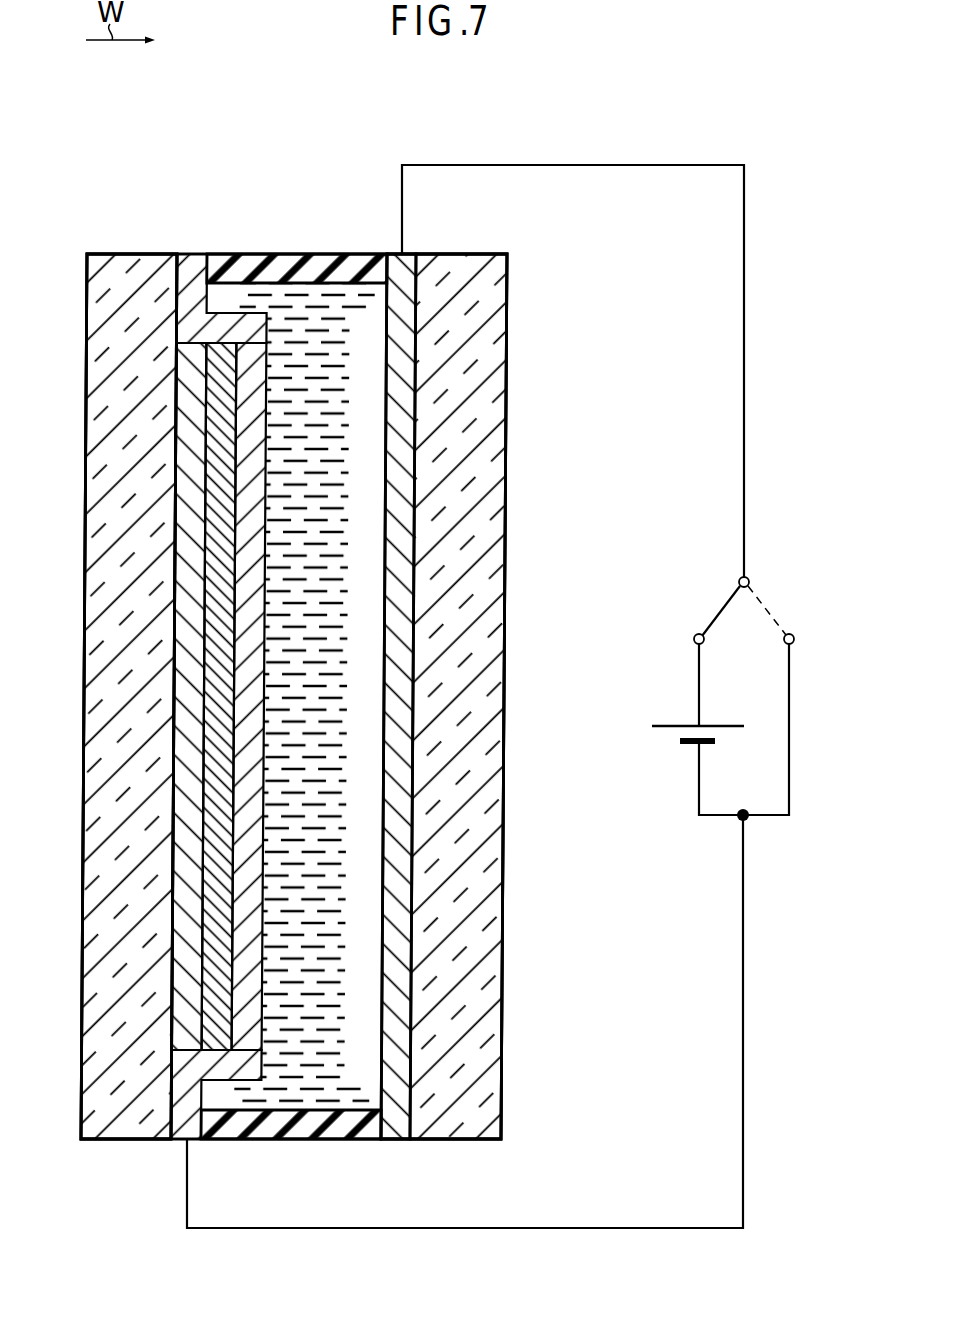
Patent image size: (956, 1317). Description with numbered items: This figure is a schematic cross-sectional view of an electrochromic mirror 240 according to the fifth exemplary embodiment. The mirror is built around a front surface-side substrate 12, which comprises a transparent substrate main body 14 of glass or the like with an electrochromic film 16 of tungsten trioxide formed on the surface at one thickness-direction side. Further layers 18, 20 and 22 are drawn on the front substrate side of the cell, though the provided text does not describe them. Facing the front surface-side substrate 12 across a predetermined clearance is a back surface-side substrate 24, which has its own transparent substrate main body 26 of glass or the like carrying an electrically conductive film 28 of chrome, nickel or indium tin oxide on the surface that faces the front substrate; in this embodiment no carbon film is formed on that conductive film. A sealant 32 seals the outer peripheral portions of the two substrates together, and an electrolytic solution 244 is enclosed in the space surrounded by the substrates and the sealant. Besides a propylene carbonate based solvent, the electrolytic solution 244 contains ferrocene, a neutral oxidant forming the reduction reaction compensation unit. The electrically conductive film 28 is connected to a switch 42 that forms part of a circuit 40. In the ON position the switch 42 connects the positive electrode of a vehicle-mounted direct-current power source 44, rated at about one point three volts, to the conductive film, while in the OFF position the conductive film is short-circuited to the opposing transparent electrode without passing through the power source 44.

The front surface-side substrate 12 is at (100, 237).
The substrate main body 14 is at (100, 295).
The electrochromic film 16 is at (180, 507).
The second substrate 18 is at (192, 237).
The electrode 20 is at (212, 405).
The insulating layer 22 is at (247, 815).
The back surface-side substrate 24 is at (527, 387).
The substrate main body 26 is at (490, 578).
The electrically conductive film 28 is at (402, 650).
The sealant 32 is at (312, 254).
The circuit 40 is at (767, 419).
The switch 42 is at (701, 598).
The direct-current power source 44 is at (663, 742).
The electrochromic mirror 240 is at (312, 178).
The electrolytic solution 244 is at (307, 1093).